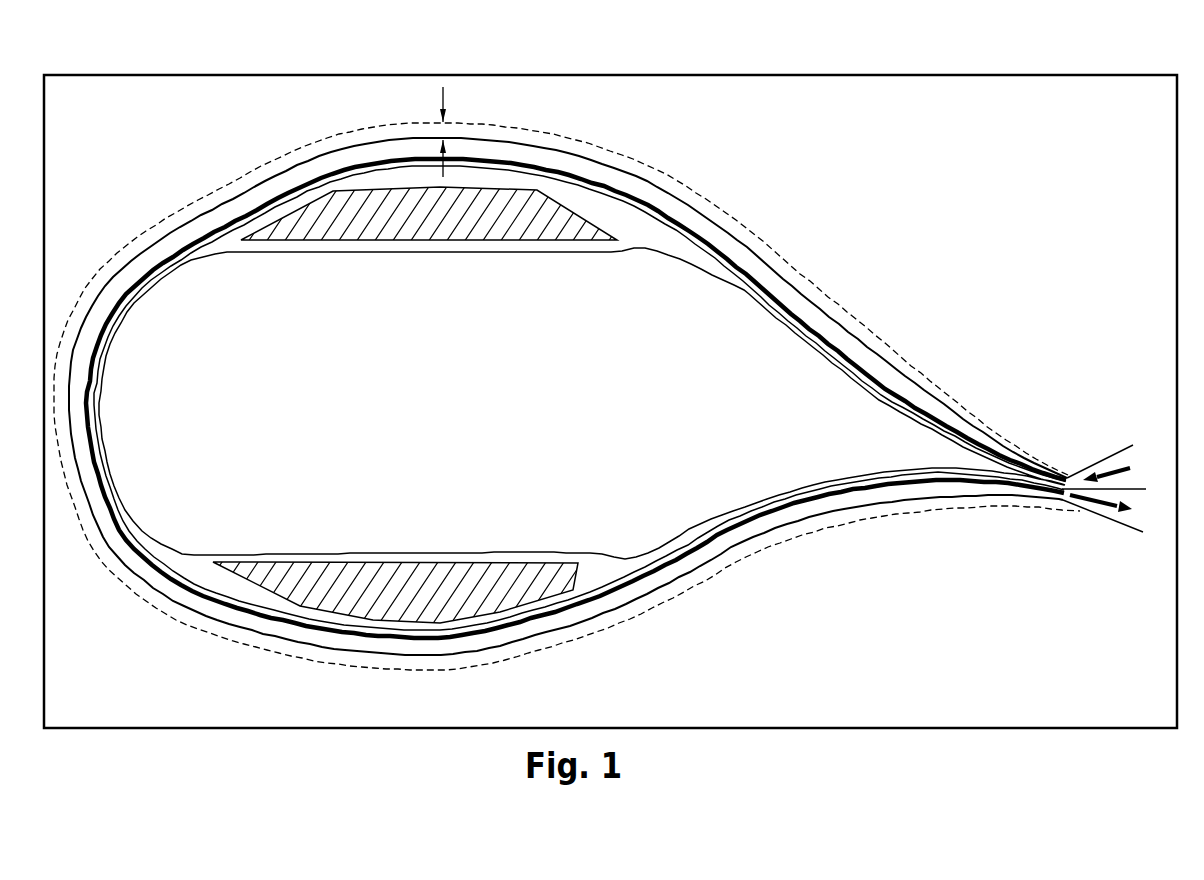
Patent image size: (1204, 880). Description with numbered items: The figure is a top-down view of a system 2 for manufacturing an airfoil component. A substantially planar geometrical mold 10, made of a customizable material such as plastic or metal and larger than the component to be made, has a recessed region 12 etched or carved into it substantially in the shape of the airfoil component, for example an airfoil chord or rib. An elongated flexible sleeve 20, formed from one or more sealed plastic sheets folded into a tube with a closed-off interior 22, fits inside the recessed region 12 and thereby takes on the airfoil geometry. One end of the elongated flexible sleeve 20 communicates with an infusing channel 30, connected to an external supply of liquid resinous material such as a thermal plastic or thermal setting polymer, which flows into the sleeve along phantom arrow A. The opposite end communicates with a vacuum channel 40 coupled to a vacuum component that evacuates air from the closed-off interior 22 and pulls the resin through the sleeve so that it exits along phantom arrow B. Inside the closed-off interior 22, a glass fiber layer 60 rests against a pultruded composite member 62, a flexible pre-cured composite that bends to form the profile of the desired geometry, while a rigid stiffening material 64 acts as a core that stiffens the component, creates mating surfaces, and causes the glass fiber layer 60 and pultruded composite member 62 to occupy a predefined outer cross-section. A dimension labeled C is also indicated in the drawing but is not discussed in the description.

The system 2 is at (239, 47).
The geometrical mold 10 is at (818, 75).
The recessed region 12 is at (752, 226).
The elongated flexible sleeve 20 is at (273, 177).
The closed-off interior 22 is at (655, 232).
The infusing channel 30 is at (1116, 458).
The vacuum channel 40 is at (1120, 520).
The glass fiber layer 60 is at (633, 243).
The pultruded composite member 62 is at (618, 195).
The stiffening material 64 is at (398, 205).
The phantom arrow A is at (1118, 469).
The phantom arrow B is at (1108, 508).
The thickness C is at (447, 95).